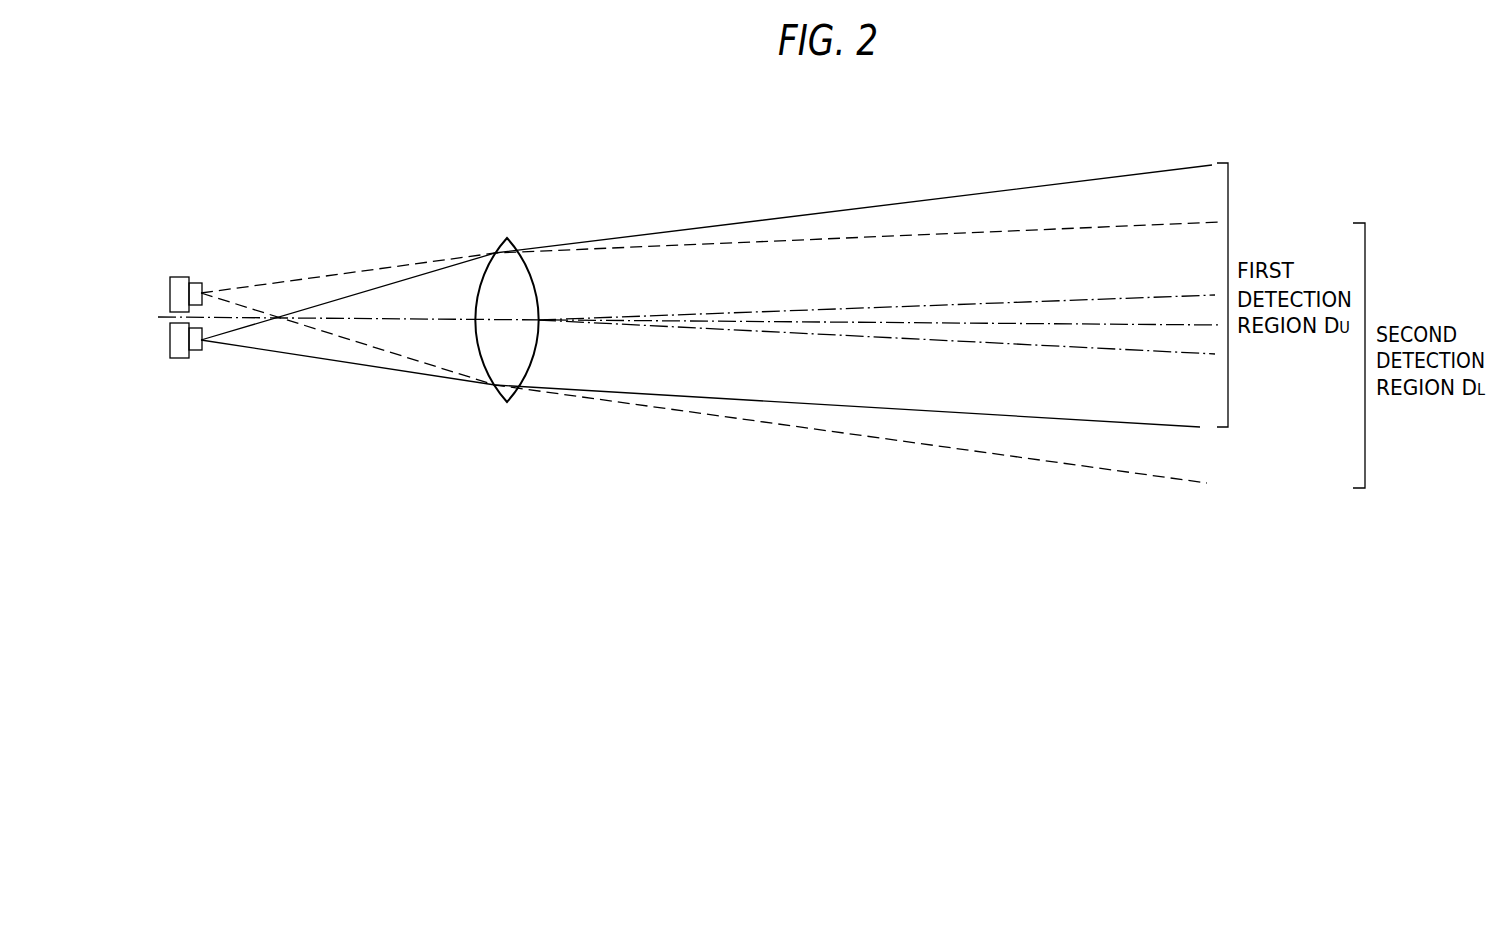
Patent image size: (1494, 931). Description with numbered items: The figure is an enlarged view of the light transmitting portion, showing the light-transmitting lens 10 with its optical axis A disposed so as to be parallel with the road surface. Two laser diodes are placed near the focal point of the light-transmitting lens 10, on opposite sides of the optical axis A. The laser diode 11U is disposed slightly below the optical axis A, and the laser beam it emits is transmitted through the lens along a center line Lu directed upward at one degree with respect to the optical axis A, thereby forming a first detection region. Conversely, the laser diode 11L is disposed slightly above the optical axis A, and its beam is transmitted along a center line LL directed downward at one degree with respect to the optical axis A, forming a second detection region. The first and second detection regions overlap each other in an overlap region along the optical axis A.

The light-transmitting lens 10 is at (510, 274).
The laser diode 11L is at (182, 277).
The laser diode 11U is at (182, 357).
The center line Lu is at (883, 305).
The center line LL is at (884, 343).
The optical axis A is at (987, 330).